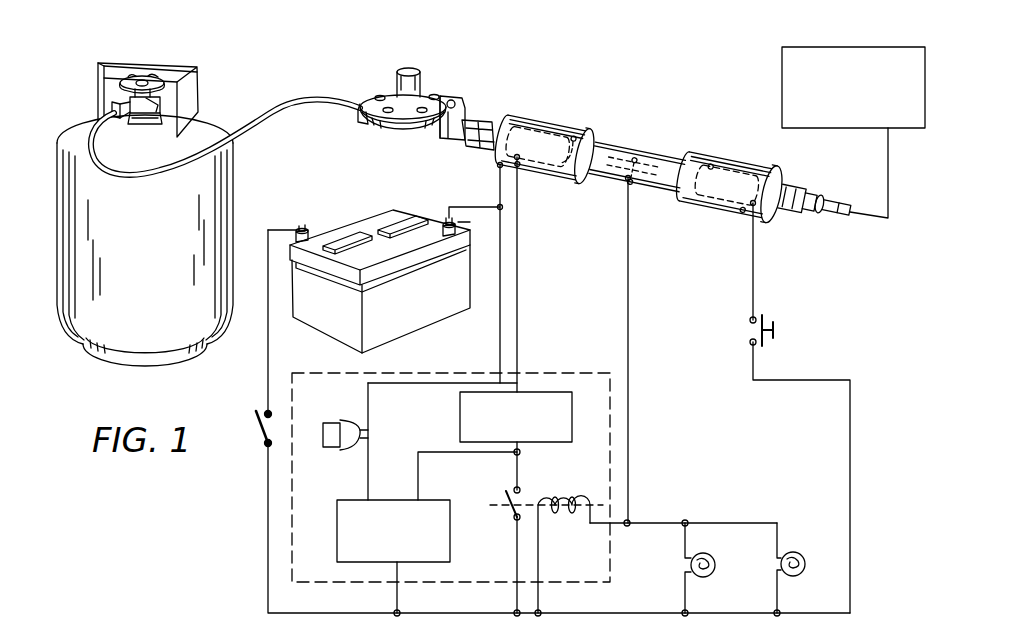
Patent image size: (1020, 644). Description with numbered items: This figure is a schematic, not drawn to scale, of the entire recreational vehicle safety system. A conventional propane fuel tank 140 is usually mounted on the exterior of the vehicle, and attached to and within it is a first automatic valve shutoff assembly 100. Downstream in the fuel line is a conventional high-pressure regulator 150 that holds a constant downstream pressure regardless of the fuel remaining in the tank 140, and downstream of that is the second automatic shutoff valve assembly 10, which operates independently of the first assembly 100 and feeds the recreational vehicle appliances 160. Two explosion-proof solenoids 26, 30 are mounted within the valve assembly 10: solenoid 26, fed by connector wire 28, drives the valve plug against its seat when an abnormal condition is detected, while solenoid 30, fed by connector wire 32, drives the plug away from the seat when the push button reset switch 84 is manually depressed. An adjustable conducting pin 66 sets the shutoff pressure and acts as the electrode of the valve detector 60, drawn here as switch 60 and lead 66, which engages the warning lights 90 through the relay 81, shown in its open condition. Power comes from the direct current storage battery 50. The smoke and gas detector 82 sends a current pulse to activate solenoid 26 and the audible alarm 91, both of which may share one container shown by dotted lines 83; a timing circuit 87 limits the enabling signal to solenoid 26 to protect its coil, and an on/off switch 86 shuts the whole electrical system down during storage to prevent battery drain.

The second automatic shutoff valve assembly 10 is at (678, 148).
The solenoid 26 is at (542, 128).
The connector wire 28 is at (520, 207).
The second solenoid 30 is at (722, 124).
The connector wire 32 is at (757, 258).
The direct current storage battery 50 is at (376, 216).
The valve detector 60 is at (640, 131).
The conducting pin 66 is at (627, 228).
The relay 81 is at (531, 496).
The smoke and gas detector 82 is at (452, 553).
The container 83 is at (340, 582).
The push button switch 84 is at (750, 330).
The on/off switch 86 is at (264, 441).
The timing circuit 87 is at (460, 412).
The warning lights 90 is at (716, 567).
The audible alarm 91 is at (352, 420).
The first automatic valve shutoff assembly 100 is at (140, 72).
The propane fuel tank 140 is at (104, 360).
The high-pressure regulator 150 is at (408, 66).
The appliances 160 is at (890, 41).